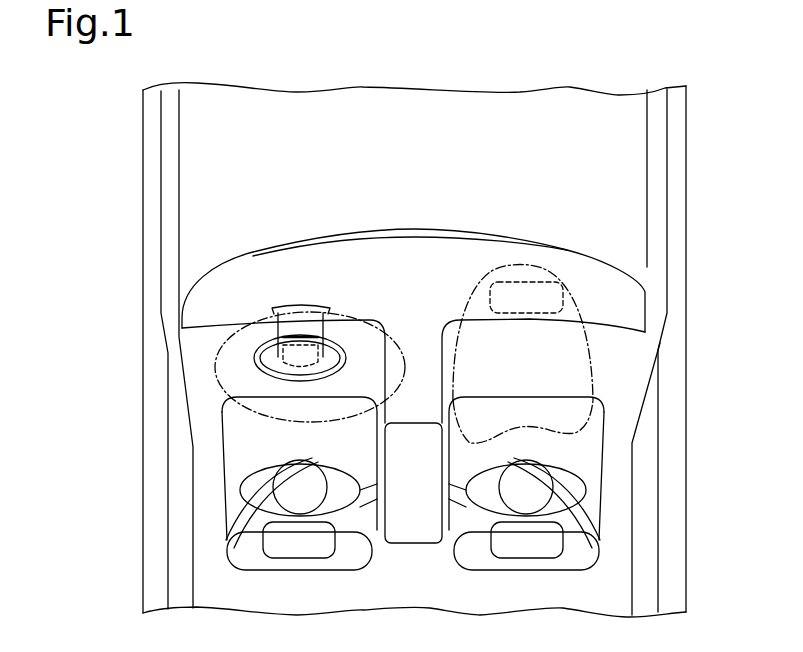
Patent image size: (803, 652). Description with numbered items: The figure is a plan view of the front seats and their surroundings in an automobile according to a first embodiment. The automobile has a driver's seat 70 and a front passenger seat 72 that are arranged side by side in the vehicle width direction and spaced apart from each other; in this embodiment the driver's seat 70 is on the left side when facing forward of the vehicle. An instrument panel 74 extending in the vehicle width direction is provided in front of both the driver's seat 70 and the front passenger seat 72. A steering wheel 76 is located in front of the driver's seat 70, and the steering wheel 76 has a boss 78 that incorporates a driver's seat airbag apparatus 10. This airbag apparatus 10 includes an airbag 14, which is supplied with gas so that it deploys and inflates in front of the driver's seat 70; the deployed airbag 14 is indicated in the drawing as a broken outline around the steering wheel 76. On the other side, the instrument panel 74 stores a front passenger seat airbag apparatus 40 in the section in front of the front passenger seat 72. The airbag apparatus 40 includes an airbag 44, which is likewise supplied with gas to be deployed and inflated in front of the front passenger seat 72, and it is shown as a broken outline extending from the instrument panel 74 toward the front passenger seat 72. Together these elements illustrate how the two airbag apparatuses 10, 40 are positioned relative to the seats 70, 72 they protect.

The driver's seat airbag apparatus 10 is at (303, 352).
The airbag 14 is at (217, 368).
The front passenger seat airbag apparatus 40 is at (530, 282).
The airbag 44 is at (590, 357).
The driver's seat 70 is at (230, 453).
The front passenger seat 72 is at (597, 453).
The instrument panel 74 is at (418, 250).
The steering wheel 76 is at (265, 342).
The boss 78 is at (326, 345).